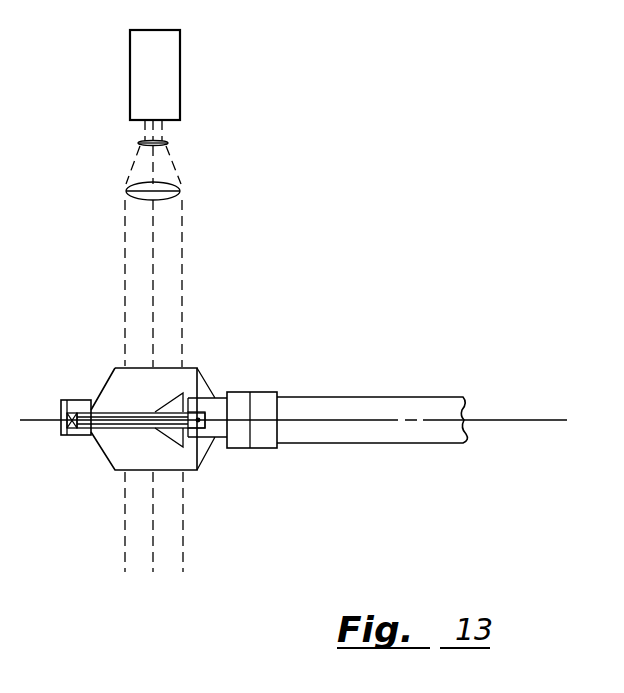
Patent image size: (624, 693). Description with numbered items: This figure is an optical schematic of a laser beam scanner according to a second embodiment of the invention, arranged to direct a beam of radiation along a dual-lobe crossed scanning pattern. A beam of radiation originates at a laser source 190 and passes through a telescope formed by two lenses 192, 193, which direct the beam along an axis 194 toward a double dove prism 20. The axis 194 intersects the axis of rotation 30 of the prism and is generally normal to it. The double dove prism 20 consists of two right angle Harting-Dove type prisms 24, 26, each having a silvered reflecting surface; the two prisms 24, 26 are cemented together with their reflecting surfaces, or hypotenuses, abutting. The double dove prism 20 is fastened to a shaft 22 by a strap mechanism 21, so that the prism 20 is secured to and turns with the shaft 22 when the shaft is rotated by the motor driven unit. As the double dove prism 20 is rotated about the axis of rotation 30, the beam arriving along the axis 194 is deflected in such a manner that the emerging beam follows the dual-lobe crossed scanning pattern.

The laser source 190 is at (181, 68).
The lens 193 is at (169, 143).
The lens 192 is at (181, 193).
The axis 194 is at (153, 268).
The double dove prism 20 is at (157, 380).
The right angle Harting-Dove type prism 26 is at (208, 385).
The strap mechanism 21 is at (100, 444).
The right angle Harting-Dove type prism 24 is at (160, 458).
The shaft 22 is at (345, 444).
The axis of rotation 30 is at (507, 420).